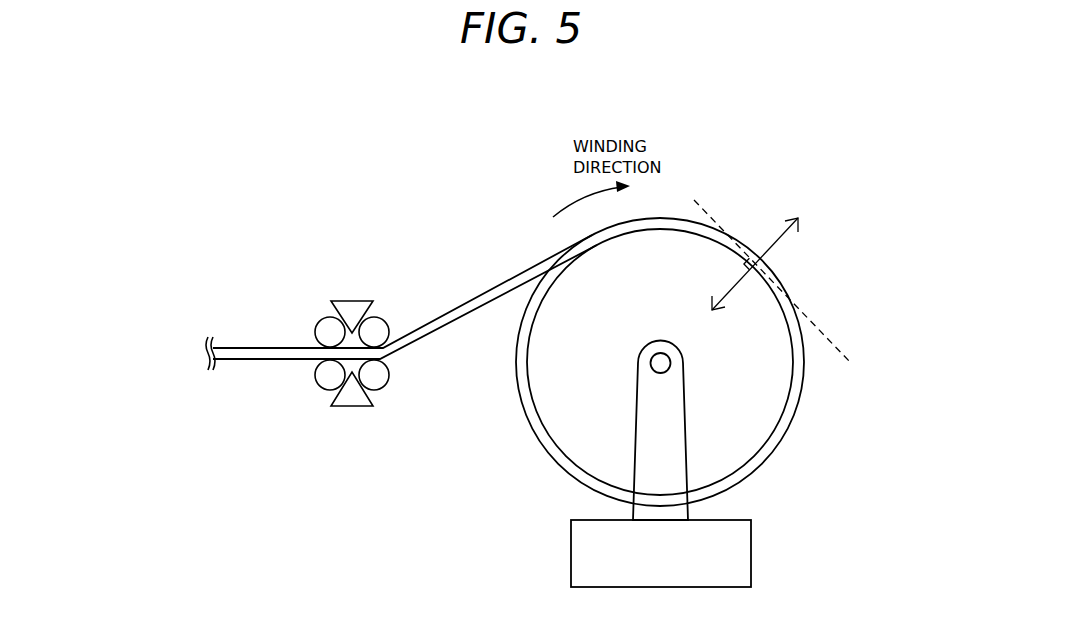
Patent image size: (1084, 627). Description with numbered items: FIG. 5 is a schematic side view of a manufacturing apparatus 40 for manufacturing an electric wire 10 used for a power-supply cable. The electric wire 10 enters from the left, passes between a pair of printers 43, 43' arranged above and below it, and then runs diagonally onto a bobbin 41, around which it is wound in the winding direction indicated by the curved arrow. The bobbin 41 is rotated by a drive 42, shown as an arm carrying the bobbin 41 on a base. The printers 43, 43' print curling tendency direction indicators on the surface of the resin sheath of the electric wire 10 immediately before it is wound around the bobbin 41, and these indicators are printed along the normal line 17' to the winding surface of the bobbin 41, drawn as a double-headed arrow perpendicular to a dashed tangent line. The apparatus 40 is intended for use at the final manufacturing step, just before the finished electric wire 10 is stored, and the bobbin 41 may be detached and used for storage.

The electric wire 10 is at (260, 362).
The manufacturing apparatus 40 is at (673, 338).
The bobbin 41 is at (763, 417).
The drive 42 is at (636, 433).
The printer 43 is at (352, 416).
The printer 43' is at (352, 288).
The normal line to the winding surface of the bobbin 17' is at (774, 281).